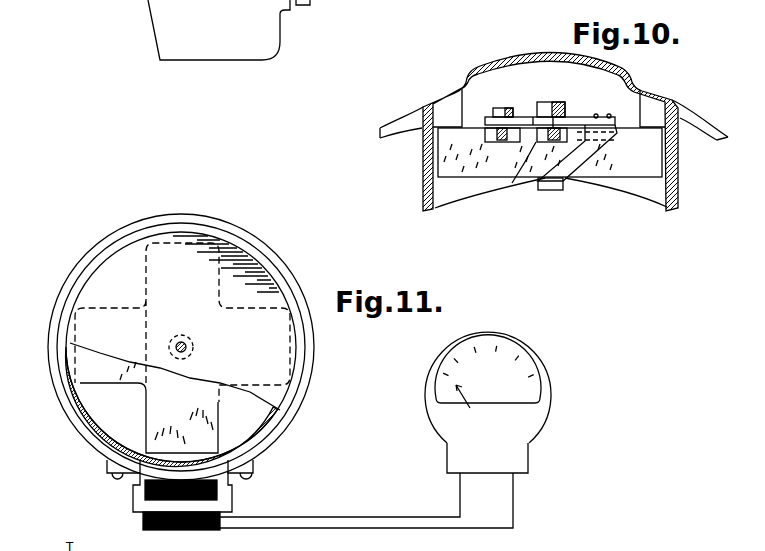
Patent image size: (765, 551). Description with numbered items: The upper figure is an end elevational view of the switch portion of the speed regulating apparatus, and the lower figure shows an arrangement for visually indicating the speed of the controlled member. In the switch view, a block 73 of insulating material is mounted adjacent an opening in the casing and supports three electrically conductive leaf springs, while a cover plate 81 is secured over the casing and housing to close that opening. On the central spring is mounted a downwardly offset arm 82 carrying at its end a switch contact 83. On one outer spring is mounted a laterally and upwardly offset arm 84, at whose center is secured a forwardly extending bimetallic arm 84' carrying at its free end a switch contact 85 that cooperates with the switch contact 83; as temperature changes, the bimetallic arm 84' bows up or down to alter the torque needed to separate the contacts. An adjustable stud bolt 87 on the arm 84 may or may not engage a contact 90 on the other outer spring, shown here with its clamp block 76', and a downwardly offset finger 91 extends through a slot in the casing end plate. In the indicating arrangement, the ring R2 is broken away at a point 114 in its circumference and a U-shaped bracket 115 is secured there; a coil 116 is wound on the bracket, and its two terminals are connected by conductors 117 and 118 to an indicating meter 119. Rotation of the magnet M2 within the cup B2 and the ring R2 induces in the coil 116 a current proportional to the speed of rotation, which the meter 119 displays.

In FIG. 10, the cover plate 81 is at (518, 60).
In FIG. 10, the block of insulating material 73 is at (460, 170).
In FIG. 10, the arm 84 is at (550, 102).
In FIG. 10, the bimetallic arm 84' is at (540, 94).
In FIG. 10, the adjustable stud bolt 87 is at (498, 109).
In FIG. 10, the contact 90 is at (493, 134).
In FIG. 10, the switch contact 85 is at (560, 107).
In FIG. 10, the clamp block 76' is at (534, 149).
In FIG. 10, the switch contact 83 is at (553, 128).
In FIG. 10, the finger 91 is at (565, 180).
In FIG. 10, the offset arm 82 is at (513, 173).
In FIG. 11, the ring R2 is at (316, 344).
In FIG. 11, the cup B2 is at (268, 280).
In FIG. 11, the magnet M2 is at (147, 410).
In FIG. 11, the break point 114 is at (143, 481).
In FIG. 11, the U-shaped bracket 115 is at (226, 501).
In FIG. 11, the coil 116 is at (165, 529).
In FIG. 11, the conductor 117 is at (310, 506).
In FIG. 11, the conductor 118 is at (349, 524).
In FIG. 11, the indicating meter 119 is at (533, 420).